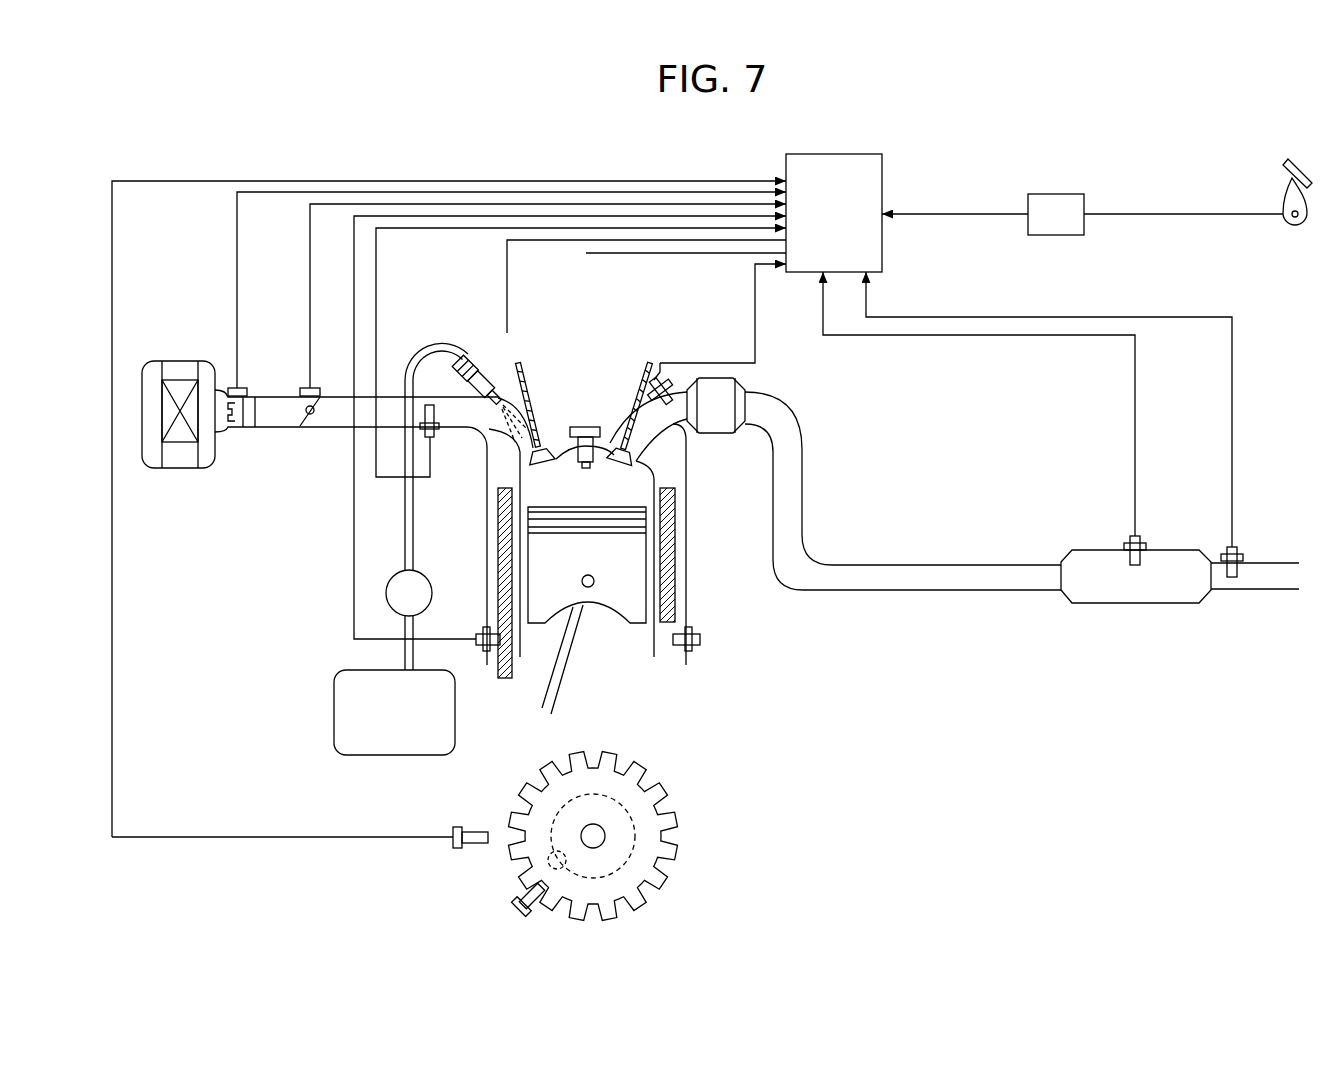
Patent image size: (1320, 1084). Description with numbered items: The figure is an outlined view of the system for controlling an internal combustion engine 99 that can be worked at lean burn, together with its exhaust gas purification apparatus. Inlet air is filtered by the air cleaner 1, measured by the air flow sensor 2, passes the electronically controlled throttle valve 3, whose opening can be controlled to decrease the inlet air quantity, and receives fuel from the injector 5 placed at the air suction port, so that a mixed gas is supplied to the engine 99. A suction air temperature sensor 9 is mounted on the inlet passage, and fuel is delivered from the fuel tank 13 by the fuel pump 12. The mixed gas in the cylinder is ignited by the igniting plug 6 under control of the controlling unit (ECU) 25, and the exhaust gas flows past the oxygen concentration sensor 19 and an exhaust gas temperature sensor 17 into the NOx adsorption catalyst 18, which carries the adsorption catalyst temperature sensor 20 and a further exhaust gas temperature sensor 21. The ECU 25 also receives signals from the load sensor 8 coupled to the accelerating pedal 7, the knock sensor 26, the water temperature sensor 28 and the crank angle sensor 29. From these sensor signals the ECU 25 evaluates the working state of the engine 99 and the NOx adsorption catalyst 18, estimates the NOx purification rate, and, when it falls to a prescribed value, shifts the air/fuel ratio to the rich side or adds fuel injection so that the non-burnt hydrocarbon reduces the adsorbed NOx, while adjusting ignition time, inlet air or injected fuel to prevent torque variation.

The air cleaner 1 is at (178, 432).
The air flow sensor 2 is at (247, 377).
The electronically controlled throttle valve 3 is at (309, 425).
The injector 5 is at (507, 333).
The igniting plug 6 is at (586, 253).
The accelerating pedal 7 is at (1272, 191).
The load sensor 8 is at (1056, 196).
The suction air temperature sensor 9 is at (437, 433).
The fuel pump 12 is at (417, 506).
The fuel tank 13 is at (394, 730).
The exhaust gas temperature sensor 17 is at (741, 403).
The NOx adsorption catalyst 18 is at (1180, 596).
The oxygen concentration sensor 19 is at (683, 368).
The adsorption catalyst temperature sensor 20 is at (1114, 539).
The exhaust gas temperature sensor 21 is at (1255, 545).
The controlling unit (ECU) 25 is at (834, 192).
The knock sensor 26 is at (703, 637).
The water temperature sensor 28 is at (489, 597).
The crank angle sensor 29 is at (466, 856).
The engine 99 is at (678, 597).